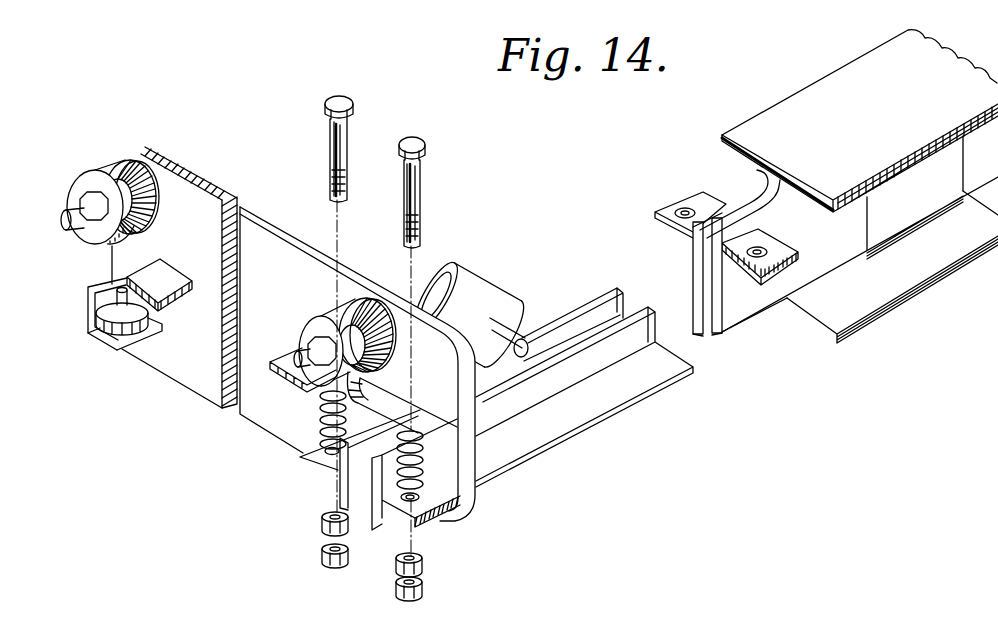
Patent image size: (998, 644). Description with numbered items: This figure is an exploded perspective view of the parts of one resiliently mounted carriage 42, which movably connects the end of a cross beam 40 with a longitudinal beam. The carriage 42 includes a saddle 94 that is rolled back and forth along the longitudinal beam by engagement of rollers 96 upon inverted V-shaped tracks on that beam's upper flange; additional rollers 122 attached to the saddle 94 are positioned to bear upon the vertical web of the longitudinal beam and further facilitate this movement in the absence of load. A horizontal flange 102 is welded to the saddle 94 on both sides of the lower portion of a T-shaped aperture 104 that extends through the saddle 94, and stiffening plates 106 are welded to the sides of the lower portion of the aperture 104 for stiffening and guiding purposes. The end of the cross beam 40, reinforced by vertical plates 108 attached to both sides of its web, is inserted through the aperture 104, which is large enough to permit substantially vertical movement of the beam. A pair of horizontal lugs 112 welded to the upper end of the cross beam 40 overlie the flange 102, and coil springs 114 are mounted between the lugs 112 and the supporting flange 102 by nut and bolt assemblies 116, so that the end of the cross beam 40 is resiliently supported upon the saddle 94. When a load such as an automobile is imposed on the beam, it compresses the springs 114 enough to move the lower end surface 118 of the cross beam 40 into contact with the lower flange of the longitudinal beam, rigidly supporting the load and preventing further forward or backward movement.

The cross beam 40 is at (843, 305).
The carriage 42 is at (273, 188).
The saddle 94 is at (497, 299).
The roller 96 is at (84, 183).
The horizontal flange 102 is at (428, 500).
The T-shaped aperture 104 is at (417, 428).
The stiffening plate 106 is at (483, 430).
The vertical plate 108 is at (740, 303).
The horizontal lug 112 is at (690, 195).
The coil spring 114 is at (330, 447).
The nut and bolt assembly 116 is at (321, 527).
The lower end surface 118 is at (710, 333).
The roller 122 is at (150, 315).